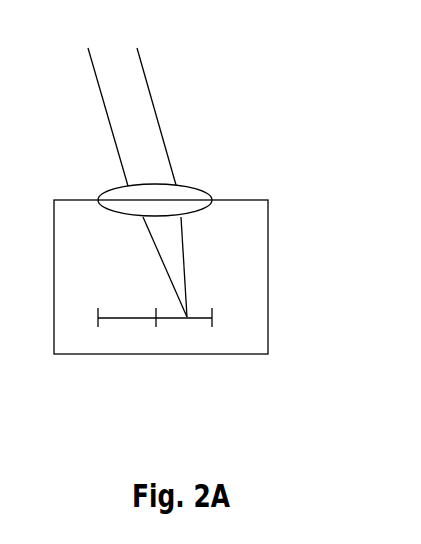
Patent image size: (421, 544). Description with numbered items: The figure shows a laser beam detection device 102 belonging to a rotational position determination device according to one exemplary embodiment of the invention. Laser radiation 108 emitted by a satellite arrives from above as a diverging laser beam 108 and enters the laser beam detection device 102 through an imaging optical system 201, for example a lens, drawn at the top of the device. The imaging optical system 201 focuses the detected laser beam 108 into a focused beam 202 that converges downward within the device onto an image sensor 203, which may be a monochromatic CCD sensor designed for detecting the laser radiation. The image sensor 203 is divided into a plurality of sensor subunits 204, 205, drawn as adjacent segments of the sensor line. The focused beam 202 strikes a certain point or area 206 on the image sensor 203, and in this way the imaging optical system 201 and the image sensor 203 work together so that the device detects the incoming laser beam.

The laser radiation 108 is at (147, 78).
The imaging optical system 201 is at (193, 188).
The laser beam detection device 102 is at (268, 212).
The focused beam 202 is at (150, 242).
The point or area 206 is at (188, 317).
The image sensor 203 is at (229, 359).
The sensor subunit 204 is at (128, 320).
The sensor subunit 205 is at (168, 320).